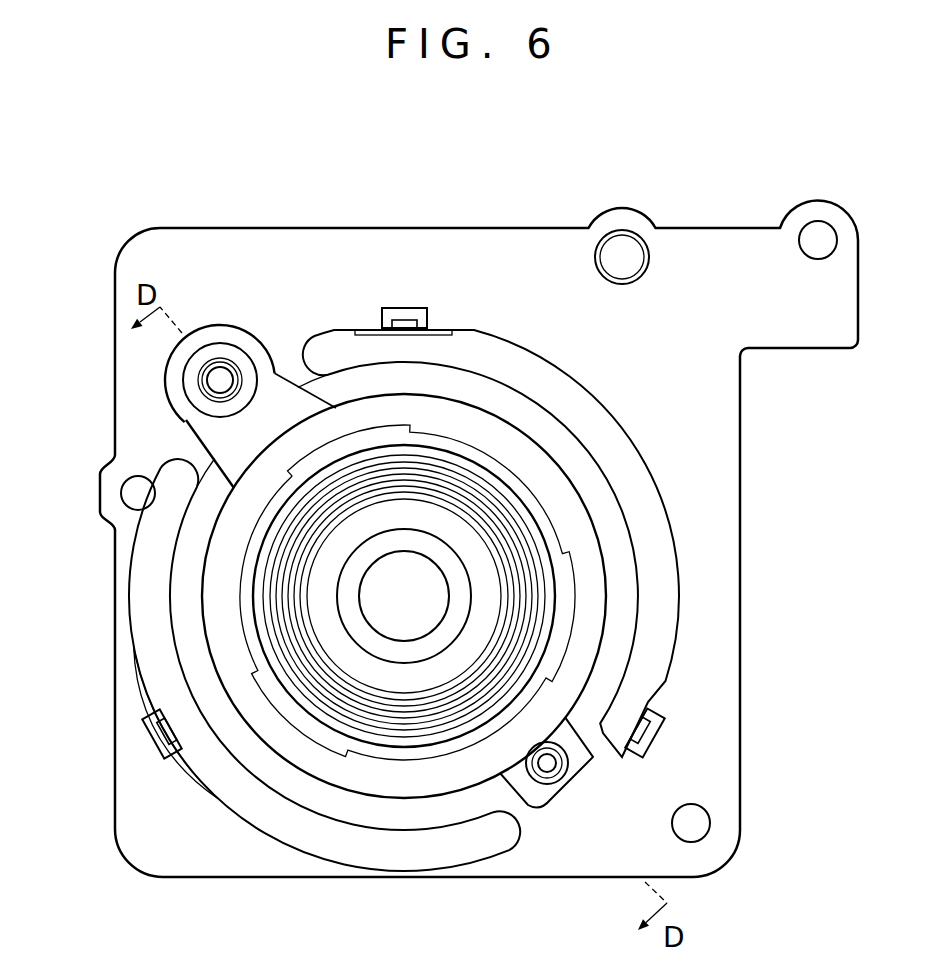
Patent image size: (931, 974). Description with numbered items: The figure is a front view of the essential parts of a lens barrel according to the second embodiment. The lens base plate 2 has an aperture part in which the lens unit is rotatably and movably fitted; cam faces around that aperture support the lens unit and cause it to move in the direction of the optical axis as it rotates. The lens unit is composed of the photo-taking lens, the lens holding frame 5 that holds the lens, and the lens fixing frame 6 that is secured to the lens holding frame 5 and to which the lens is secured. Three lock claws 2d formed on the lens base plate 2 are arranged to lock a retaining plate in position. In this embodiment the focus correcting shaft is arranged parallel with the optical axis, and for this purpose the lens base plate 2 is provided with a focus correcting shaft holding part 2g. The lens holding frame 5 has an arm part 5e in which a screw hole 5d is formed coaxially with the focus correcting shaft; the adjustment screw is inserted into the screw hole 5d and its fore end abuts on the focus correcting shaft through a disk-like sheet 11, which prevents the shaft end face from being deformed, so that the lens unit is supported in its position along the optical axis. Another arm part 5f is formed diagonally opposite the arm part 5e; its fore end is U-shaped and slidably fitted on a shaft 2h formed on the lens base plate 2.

The lens base plate 2 is at (712, 405).
The lock claws 2d is at (403, 308).
The focus correcting shaft holding part 2g is at (200, 380).
The shaft 2h is at (533, 773).
The lens holding frame 5 is at (213, 617).
The screw hole 5d is at (182, 383).
The arm part 5e is at (283, 400).
The arm part 5f is at (588, 760).
The lens fixing frame 6 is at (288, 583).
The sheet 11 is at (200, 348).